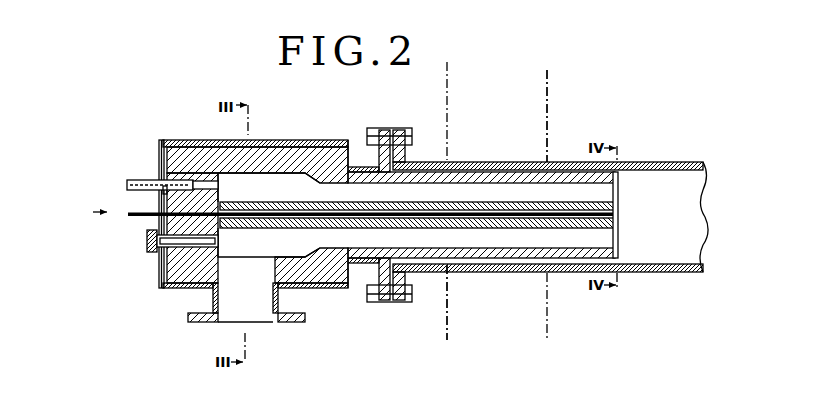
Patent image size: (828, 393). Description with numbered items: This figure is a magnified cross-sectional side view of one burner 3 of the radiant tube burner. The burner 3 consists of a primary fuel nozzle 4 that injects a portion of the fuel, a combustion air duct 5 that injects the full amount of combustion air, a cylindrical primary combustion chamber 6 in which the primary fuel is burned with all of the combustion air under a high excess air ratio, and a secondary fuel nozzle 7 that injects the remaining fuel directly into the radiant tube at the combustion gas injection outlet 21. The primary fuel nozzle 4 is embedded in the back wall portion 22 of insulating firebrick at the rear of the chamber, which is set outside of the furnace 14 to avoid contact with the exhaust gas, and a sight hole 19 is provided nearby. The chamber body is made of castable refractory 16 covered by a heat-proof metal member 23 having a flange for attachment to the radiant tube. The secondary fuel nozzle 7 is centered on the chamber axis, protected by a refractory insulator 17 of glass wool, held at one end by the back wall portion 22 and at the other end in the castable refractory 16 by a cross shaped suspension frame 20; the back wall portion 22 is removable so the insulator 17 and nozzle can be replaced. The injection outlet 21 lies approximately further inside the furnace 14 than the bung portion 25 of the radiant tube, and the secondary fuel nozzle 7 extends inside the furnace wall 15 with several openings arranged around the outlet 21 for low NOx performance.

The burner 3 is at (216, 230).
The primary fuel nozzle 4 is at (132, 181).
The combustion air duct 5 is at (262, 318).
The primary combustion chamber 6 is at (280, 194).
The secondary fuel nozzle 7 is at (133, 216).
The furnace 14 is at (624, 360).
The furnace wall 15 is at (548, 90).
The castable refractory 16 is at (333, 152).
The refractory insulator 17 is at (425, 200).
The sight hole 19 is at (150, 250).
The cross shaped suspension frame 20 is at (616, 260).
The combustion gas injection outlet 21 is at (550, 240).
The back wall portion 22 is at (160, 200).
The heat-proof metal member 23 is at (305, 140).
The bung portion 25 is at (500, 277).